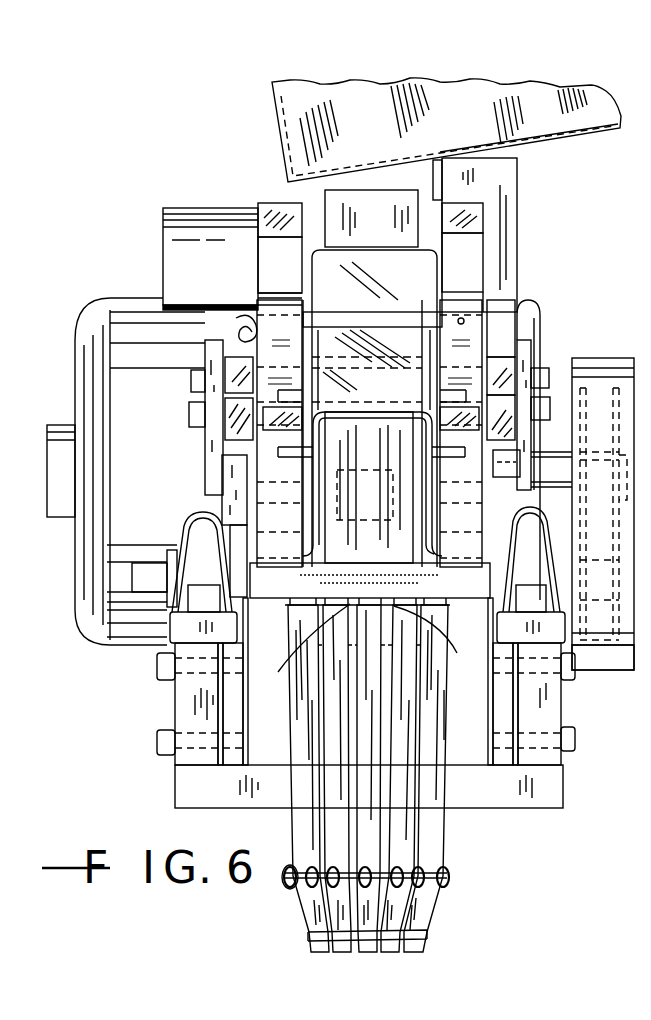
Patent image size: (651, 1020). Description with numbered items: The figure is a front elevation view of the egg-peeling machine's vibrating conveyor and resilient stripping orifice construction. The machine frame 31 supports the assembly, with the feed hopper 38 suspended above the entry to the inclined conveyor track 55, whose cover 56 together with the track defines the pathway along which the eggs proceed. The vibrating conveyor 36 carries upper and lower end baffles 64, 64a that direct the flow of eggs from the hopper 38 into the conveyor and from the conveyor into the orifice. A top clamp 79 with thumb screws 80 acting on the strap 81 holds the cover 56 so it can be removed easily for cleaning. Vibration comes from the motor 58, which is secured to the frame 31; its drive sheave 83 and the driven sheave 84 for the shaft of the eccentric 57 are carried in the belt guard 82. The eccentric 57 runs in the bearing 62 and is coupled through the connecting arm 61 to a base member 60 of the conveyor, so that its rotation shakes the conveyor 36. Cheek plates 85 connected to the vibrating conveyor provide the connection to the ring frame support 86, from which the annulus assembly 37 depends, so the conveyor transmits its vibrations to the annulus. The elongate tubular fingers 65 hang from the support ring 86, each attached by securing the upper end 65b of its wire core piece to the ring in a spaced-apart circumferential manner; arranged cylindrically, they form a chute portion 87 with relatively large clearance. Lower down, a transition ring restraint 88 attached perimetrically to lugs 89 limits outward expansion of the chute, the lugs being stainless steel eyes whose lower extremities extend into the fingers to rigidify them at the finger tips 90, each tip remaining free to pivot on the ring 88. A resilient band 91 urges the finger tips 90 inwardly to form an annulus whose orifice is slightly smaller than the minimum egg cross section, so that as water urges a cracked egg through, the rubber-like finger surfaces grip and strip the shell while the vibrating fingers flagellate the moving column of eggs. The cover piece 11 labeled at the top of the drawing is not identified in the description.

The cover 11 is at (588, 86).
The feed hopper 38 is at (556, 132).
The vibratory conveyor section 36 is at (272, 205).
The upper end baffle 64 is at (378, 196).
The cover 56 is at (412, 264).
The top clamp 79 is at (372, 312).
The strap 81 is at (262, 352).
The thumb screws 80 is at (242, 322).
The belt guard 82 is at (590, 358).
The drive sheave 83 is at (605, 434).
The lower end baffle 64a is at (374, 425).
The inclined conveyor track 55 is at (433, 528).
The cheek plates 85 is at (205, 476).
The connecting arm 61 is at (224, 499).
The bearing 62 is at (173, 590).
The motor 58 is at (80, 592).
The eccentric 57 is at (249, 598).
The ring frame support 86 is at (303, 646).
The base member 60 is at (462, 598).
The fingers 65 is at (307, 720).
The upper end of wire core pieces 65b is at (440, 641).
The chute portion 87 is at (448, 714).
The machine frame 31 is at (178, 783).
The orifice structure 37 is at (470, 830).
The transition ring restraint 88 is at (446, 886).
The lugs 89 is at (300, 890).
The finger tips 90 is at (432, 920).
The resilient band 91 is at (312, 941).
The driven sheave 84 is at (597, 640).